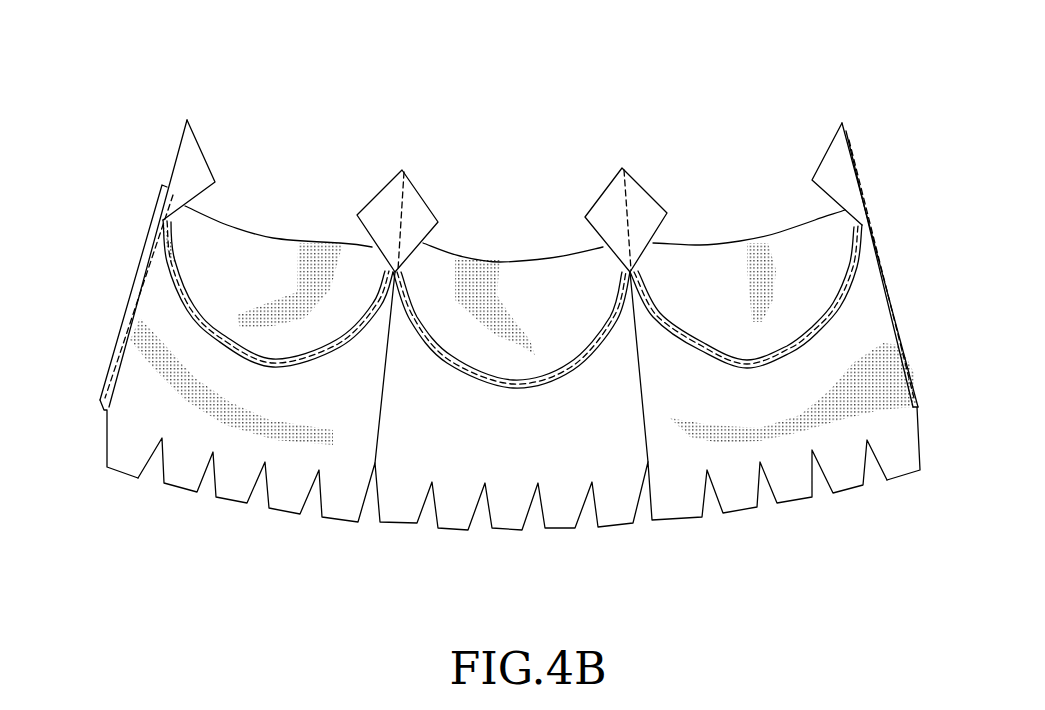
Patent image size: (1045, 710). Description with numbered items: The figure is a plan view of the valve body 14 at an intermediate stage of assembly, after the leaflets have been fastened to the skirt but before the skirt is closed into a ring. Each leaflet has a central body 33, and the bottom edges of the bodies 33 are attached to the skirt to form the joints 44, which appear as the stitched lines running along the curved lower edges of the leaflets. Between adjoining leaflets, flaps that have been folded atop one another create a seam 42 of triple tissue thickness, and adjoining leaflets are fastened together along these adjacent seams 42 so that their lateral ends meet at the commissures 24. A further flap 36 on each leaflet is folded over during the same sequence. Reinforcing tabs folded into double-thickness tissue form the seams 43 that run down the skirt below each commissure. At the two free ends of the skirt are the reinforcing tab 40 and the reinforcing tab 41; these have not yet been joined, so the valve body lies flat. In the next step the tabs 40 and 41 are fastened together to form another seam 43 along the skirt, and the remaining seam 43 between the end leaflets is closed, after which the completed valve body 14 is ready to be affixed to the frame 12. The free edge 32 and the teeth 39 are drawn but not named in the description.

The frame 12 is at (157, 395).
The valve body 14 is at (295, 130).
The commissures 24 is at (427, 177).
The leaflet free edge 32 is at (233, 223).
The bodies of the leaflets 33 is at (266, 280).
The flap 36 is at (200, 142).
The attachment teeth 39 is at (180, 490).
The reinforcing tab 40 is at (110, 360).
The reinforcing tab 41 is at (880, 258).
The seam 42 is at (403, 168).
The seam 43 is at (368, 525).
The joint 44 is at (187, 325).